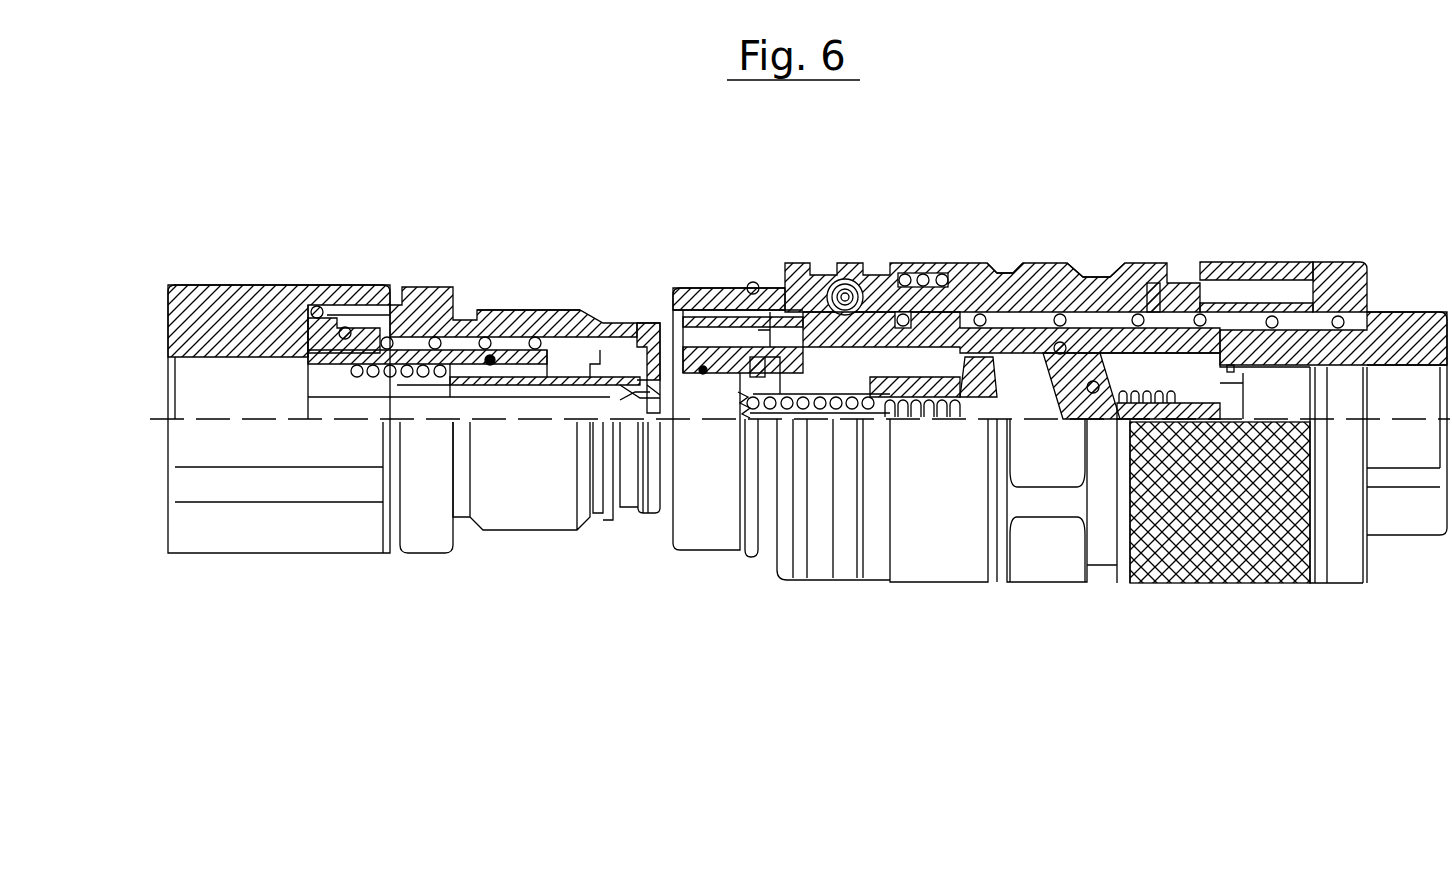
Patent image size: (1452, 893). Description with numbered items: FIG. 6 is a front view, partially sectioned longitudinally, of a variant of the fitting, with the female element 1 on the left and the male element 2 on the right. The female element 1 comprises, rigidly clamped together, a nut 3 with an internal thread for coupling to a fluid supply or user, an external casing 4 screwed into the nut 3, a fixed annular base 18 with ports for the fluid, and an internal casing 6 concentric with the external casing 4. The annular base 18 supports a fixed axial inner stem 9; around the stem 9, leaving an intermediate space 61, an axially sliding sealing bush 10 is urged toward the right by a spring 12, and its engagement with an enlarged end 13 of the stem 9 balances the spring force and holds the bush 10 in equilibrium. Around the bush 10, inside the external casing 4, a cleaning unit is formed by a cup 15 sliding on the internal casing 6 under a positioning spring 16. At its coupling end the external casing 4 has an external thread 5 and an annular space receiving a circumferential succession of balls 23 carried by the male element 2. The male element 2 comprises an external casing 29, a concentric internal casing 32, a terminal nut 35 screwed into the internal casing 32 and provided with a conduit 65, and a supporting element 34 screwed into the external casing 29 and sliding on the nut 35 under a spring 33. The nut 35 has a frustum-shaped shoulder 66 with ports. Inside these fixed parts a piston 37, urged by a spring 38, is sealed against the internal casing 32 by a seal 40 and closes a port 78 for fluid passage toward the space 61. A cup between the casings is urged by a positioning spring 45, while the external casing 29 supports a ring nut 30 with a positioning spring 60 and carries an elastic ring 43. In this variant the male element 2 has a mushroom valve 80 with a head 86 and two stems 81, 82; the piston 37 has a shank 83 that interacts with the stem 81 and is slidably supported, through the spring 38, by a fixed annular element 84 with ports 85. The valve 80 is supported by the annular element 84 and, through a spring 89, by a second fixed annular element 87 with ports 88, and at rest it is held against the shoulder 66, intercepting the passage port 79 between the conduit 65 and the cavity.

The female element 1 is at (320, 560).
The male element 2 is at (955, 597).
The nut 3 is at (244, 300).
The external casing 4 is at (420, 287).
The external thread 5 is at (523, 312).
The internal casing 6 is at (470, 350).
The fixed axial inner stem 9 is at (427, 410).
The sealing bush 10 is at (553, 380).
The spring 12 is at (373, 377).
The enlarged end 13 is at (623, 392).
The cup 15 is at (573, 322).
The positioning spring 16 is at (486, 338).
The fixed annular base 18 is at (327, 367).
The balls 23 is at (843, 279).
The external casing 29 is at (1058, 312).
The ring nut 30 is at (880, 312).
The internal casing 32 is at (1005, 300).
The spring 33 is at (1275, 316).
The supporting element 34 is at (1255, 262).
The terminal nut 35 is at (1400, 312).
The piston 37 is at (717, 395).
The spring 38 is at (917, 425).
The seal 40 is at (697, 352).
The elastic ring 43 is at (751, 281).
The positioning spring 45 is at (1076, 278).
The positioning spring 60 is at (930, 286).
The intermediate space 61 is at (517, 387).
The conduit 65 is at (1401, 405).
The frustum-shaped shoulder 66 is at (1090, 355).
The port for the passage of the fluid 78 is at (769, 320).
The passage port 79 is at (1098, 382).
The mushroom valve 80 is at (1056, 398).
The stem 81 is at (983, 413).
The stem 82 is at (1138, 432).
The shank 83 is at (813, 413).
The fixed annular element 84 is at (982, 313).
The ports 85 is at (912, 340).
The head 86 is at (1065, 343).
The second fixed annular element 87 is at (1142, 314).
The ports 88 is at (1234, 389).
The spring 89 is at (1155, 282).